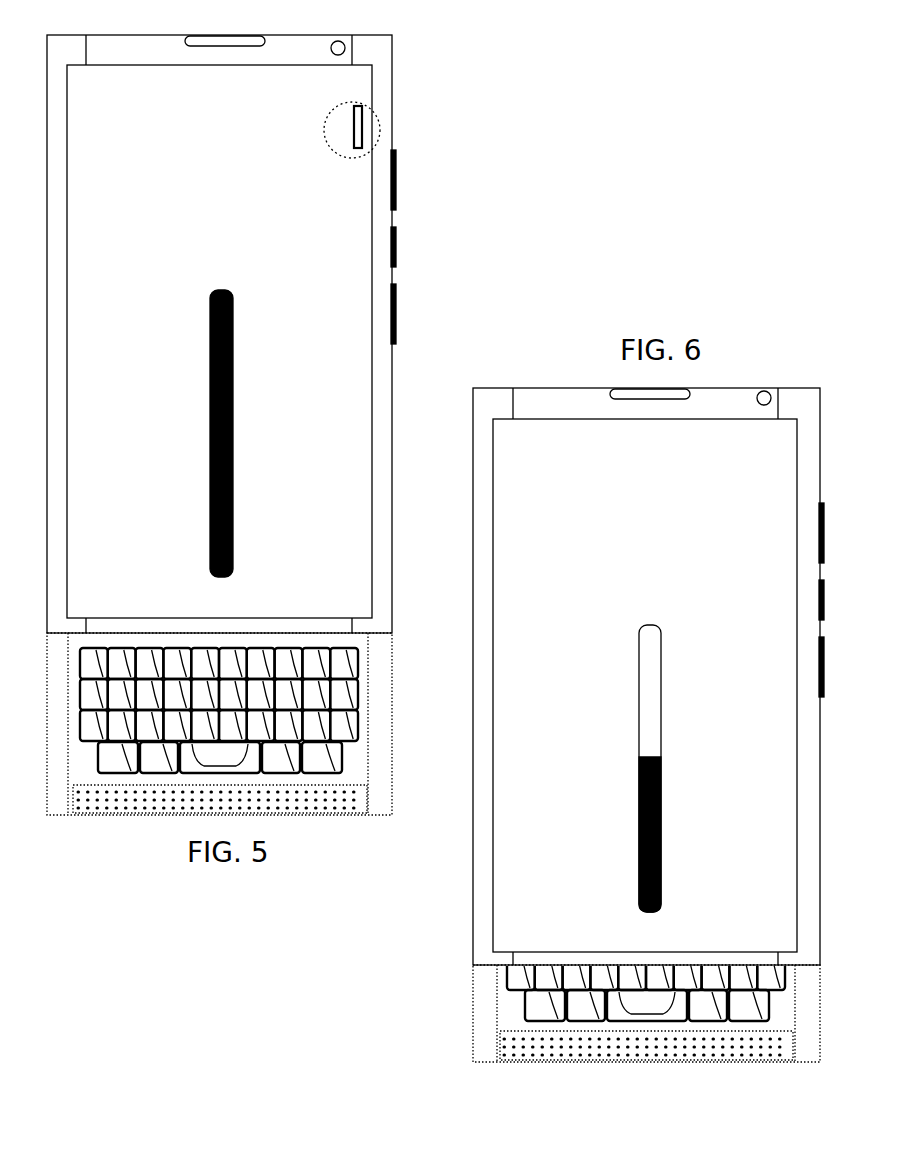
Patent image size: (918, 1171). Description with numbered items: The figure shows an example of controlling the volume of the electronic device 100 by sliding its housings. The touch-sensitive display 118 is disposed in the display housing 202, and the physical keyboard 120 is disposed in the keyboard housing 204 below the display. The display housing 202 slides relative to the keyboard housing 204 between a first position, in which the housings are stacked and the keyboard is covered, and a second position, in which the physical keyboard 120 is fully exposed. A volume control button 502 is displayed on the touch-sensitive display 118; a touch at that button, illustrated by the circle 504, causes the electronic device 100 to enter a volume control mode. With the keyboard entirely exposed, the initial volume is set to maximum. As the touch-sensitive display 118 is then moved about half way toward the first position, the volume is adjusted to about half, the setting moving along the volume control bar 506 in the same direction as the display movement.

In FIG. 5, the electronic device 100 is at (95, 840).
In FIG. 6, the electronic device 100 is at (509, 1088).
In FIG. 5, the touch-sensitive display 118 is at (350, 407).
In FIG. 6, the touch-sensitive display 118 is at (513, 895).
In FIG. 5, the physical keyboard 120 is at (358, 710).
In FIG. 6, the physical keyboard 120 is at (510, 980).
In FIG. 5, the display housing 202 is at (396, 312).
In FIG. 6, the display housing 202 is at (473, 808).
In FIG. 5, the keyboard housing 204 is at (219, 724).
In FIG. 6, the keyboard housing 204 is at (473, 1005).
In FIG. 5, the volume control button 502 is at (362, 112).
In FIG. 5, the circle 504 is at (380, 130).
In FIG. 5, the volume control bar 506 is at (233, 433).
In FIG. 6, the volume control bar 506 is at (638, 660).